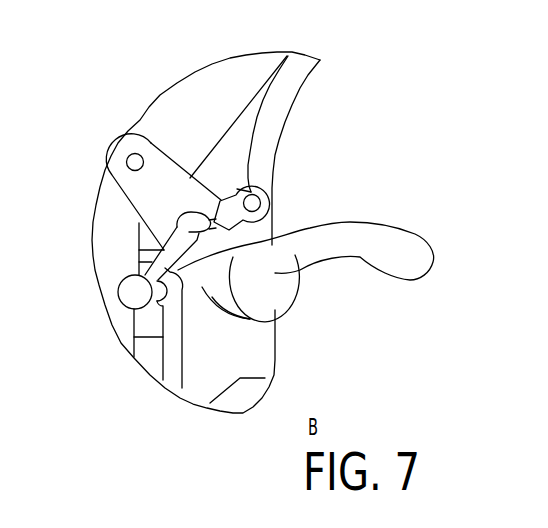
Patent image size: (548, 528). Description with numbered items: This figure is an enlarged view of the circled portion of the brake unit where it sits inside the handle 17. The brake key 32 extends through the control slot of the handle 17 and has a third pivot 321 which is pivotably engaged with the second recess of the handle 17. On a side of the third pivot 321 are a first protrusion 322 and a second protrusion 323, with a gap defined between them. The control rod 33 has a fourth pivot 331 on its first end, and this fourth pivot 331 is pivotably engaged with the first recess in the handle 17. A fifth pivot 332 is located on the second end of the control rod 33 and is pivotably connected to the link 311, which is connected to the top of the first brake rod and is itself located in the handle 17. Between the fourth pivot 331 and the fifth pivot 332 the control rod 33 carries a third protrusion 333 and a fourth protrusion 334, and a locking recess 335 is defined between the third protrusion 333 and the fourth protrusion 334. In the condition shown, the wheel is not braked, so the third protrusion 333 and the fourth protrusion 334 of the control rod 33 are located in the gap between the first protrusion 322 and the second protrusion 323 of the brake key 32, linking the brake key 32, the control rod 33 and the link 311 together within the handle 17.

The handle 17 is at (177, 67).
The brake key 32 is at (388, 224).
The third pivot 321 is at (128, 159).
The first protrusion 322 is at (132, 249).
The second protrusion 323 is at (254, 176).
The control rod 33 is at (212, 302).
The fourth pivot 331 is at (263, 193).
The fifth pivot 332 is at (118, 294).
The third protrusion 333 is at (150, 220).
The fourth protrusion 334 is at (236, 236).
The locking recess 335 is at (236, 258).
The link 311 is at (142, 323).